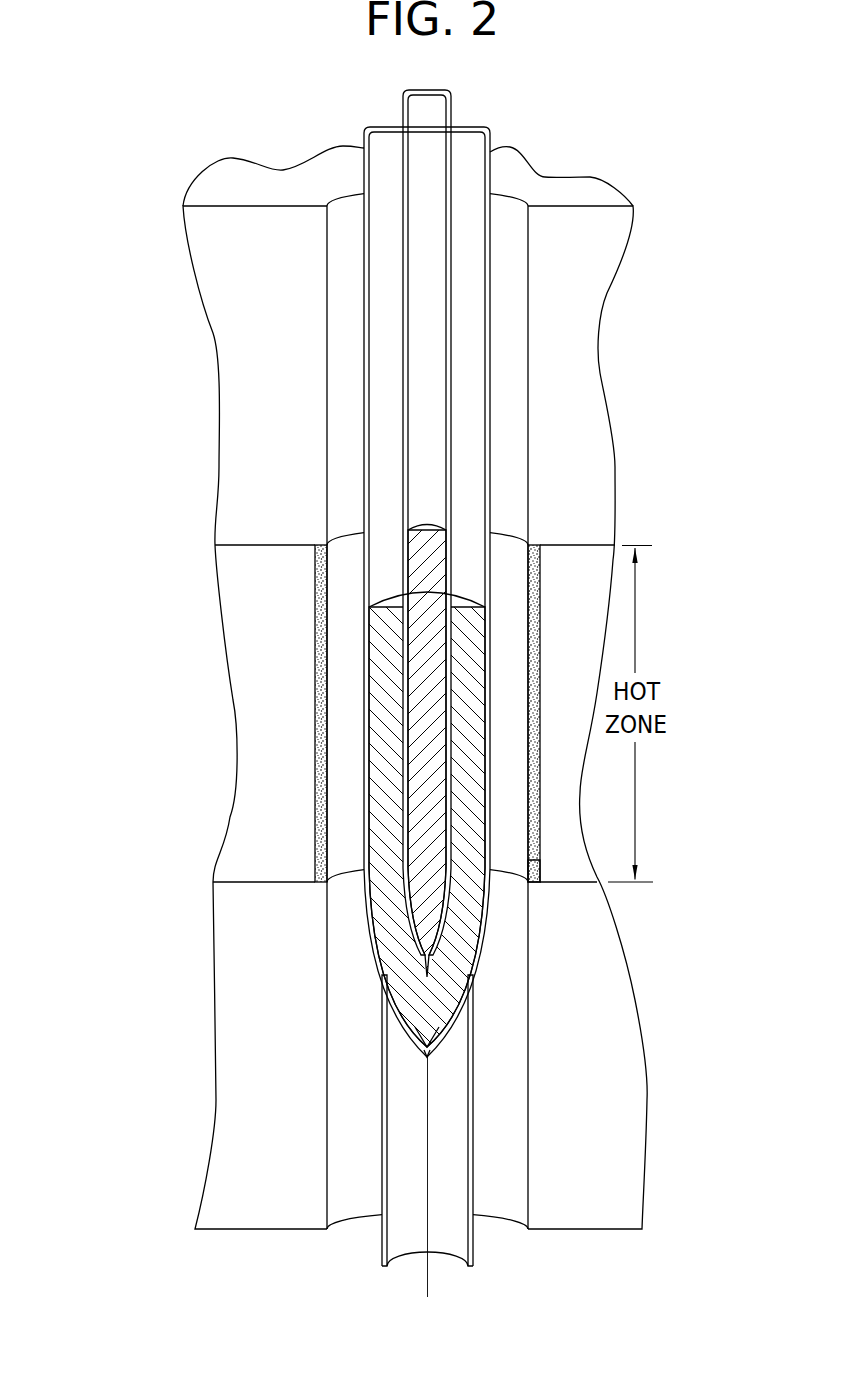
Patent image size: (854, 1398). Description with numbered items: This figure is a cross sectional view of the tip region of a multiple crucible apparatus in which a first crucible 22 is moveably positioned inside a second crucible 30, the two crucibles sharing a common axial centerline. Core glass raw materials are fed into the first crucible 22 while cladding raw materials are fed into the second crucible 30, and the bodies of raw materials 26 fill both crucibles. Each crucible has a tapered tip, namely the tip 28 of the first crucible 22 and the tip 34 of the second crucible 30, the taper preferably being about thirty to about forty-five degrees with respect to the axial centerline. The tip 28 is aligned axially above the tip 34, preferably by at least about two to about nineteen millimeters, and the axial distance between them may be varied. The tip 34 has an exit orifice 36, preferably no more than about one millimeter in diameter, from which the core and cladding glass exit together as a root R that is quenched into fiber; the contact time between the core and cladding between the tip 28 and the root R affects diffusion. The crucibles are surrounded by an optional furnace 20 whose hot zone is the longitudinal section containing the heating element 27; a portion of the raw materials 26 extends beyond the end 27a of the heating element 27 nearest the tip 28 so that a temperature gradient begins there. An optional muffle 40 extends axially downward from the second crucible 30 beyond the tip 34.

The furnace 20 is at (207, 413).
The first crucible 22 is at (466, 106).
The bodies of raw materials 26 is at (470, 620).
The heating element 27 is at (542, 607).
The end of heating element 27a is at (533, 870).
The tip of first crucible 28 is at (411, 921).
The second crucible 30 is at (505, 171).
The tip of second crucible 34 is at (406, 1010).
The exit orifice 36 is at (438, 1010).
The root R is at (425, 1035).
The muffle 40 is at (484, 1241).